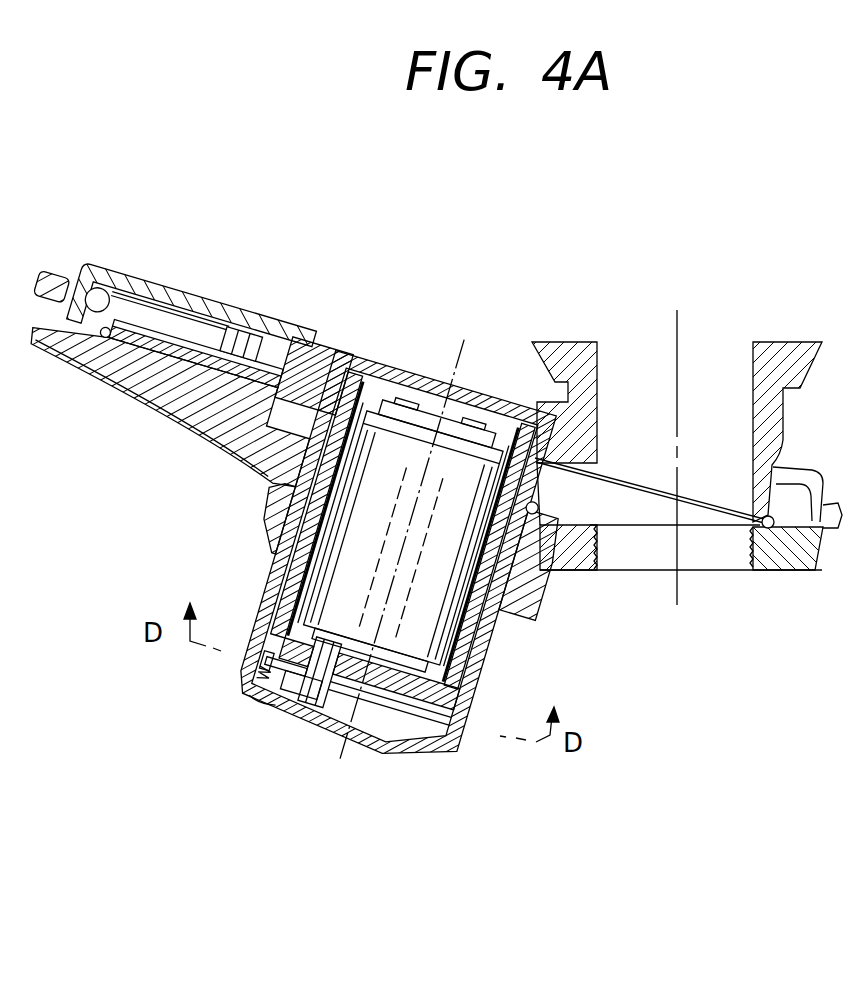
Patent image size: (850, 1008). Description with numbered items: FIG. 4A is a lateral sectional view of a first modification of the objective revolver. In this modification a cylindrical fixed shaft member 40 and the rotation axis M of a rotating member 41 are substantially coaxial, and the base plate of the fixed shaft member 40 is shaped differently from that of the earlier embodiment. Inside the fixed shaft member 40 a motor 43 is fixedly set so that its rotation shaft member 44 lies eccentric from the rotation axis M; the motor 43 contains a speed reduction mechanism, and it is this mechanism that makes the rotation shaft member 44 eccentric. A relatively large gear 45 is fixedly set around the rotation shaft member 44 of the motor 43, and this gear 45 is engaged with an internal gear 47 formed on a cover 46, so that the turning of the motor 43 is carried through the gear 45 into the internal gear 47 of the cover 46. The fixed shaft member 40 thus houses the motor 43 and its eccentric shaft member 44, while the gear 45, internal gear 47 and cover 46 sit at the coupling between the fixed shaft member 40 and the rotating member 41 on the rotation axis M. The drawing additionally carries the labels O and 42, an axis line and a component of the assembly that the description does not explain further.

The rotation axis M is at (460, 354).
The axis of fixed member O is at (679, 323).
The fixed shaft member 40 is at (278, 570).
The rotating member 41 is at (783, 557).
The bottom plate 42 is at (432, 688).
The motor 43 is at (272, 500).
The rotation shaft member 44 is at (318, 716).
The gear 45 is at (282, 718).
The cover 46 is at (273, 607).
The internal gear 47 is at (263, 700).